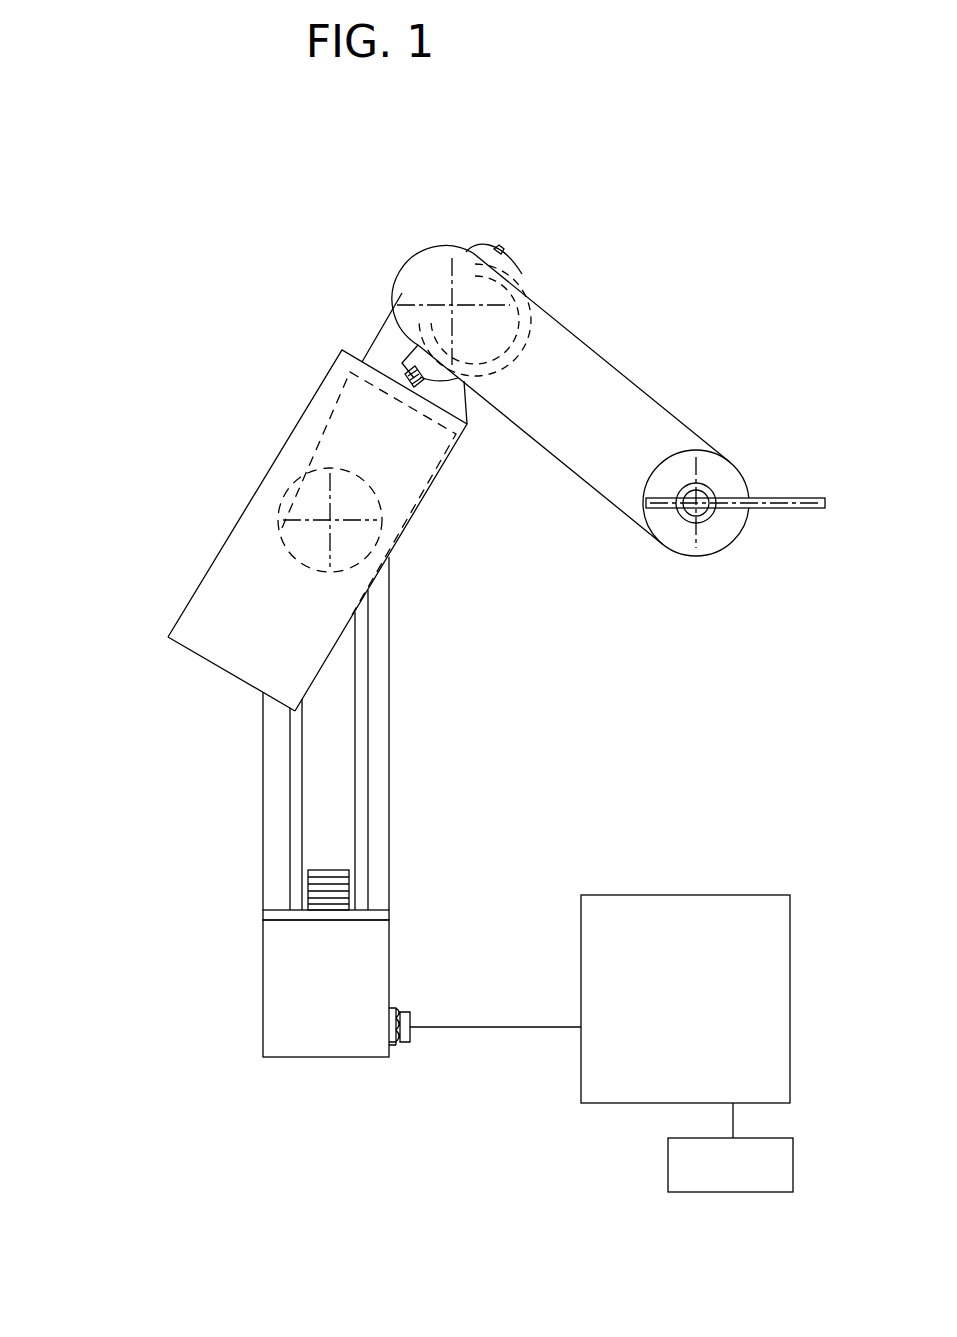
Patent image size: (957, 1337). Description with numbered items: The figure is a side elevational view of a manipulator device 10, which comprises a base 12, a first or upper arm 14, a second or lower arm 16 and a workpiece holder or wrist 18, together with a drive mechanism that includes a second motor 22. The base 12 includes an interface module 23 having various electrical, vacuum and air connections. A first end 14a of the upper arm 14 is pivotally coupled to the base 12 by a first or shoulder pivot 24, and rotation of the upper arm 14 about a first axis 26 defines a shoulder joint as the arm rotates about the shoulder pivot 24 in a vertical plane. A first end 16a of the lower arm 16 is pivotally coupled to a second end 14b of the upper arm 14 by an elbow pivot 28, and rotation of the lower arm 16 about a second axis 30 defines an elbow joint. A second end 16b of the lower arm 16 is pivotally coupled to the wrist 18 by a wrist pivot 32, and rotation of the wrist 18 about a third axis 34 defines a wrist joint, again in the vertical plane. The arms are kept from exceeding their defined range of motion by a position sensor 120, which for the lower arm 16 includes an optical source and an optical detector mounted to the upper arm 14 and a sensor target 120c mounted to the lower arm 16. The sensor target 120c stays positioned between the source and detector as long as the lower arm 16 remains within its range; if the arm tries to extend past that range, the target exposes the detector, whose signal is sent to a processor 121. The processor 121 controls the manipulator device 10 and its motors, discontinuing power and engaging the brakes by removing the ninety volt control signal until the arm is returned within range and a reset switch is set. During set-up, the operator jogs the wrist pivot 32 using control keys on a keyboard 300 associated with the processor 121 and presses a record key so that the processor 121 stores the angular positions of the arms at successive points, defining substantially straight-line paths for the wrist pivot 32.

The manipulator device 10 is at (194, 526).
The base 12 is at (275, 815).
The upper arm 14 is at (388, 340).
The first end of the upper arm 14a is at (383, 536).
The second end of the upper arm 14b is at (392, 297).
The lower arm 16 is at (598, 383).
The first end of the lower arm 16a is at (490, 262).
The second end of the lower arm 16b is at (723, 452).
The wrist 18 is at (733, 478).
The second motor 22 is at (208, 614).
The interface module 23 is at (372, 946).
The shoulder pivot 24 is at (313, 508).
The first axis 26 is at (330, 520).
The elbow pivot 28 is at (437, 283).
The second axis 30 is at (452, 313).
The wrist pivot 32 is at (688, 524).
The third axis 34 is at (697, 505).
The position sensor 120 is at (428, 385).
The sensor target 120c is at (522, 272).
The processor 121 is at (665, 1013).
The keyboard 300 is at (707, 1181).